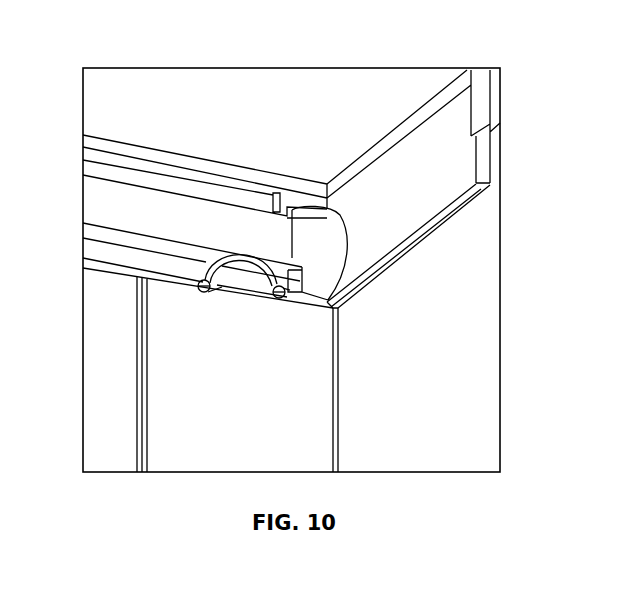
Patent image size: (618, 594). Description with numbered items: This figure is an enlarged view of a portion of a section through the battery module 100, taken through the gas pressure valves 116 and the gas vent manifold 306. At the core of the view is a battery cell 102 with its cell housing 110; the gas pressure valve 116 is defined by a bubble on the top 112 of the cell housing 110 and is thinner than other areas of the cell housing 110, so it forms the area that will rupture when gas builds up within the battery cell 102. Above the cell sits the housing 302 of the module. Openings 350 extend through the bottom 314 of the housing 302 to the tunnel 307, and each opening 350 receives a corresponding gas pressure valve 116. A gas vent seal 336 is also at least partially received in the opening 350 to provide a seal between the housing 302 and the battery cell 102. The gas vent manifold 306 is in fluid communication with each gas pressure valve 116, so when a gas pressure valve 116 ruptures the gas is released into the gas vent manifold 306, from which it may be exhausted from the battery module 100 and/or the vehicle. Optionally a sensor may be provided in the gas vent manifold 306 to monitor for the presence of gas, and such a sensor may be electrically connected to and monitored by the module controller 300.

The battery module 100 is at (245, 50).
The module controller 300 is at (185, 175).
The housing 302 is at (465, 153).
The openings 350 is at (275, 258).
The tunnel 307 is at (126, 206).
The top 112 is at (409, 239).
The gas vent manifold 306 is at (332, 253).
The gas pressure valve 116 is at (222, 302).
The gas vent seal 336 is at (270, 302).
The bottom 314 is at (308, 308).
The battery cell 102 is at (487, 377).
The cell housing 110 is at (333, 447).